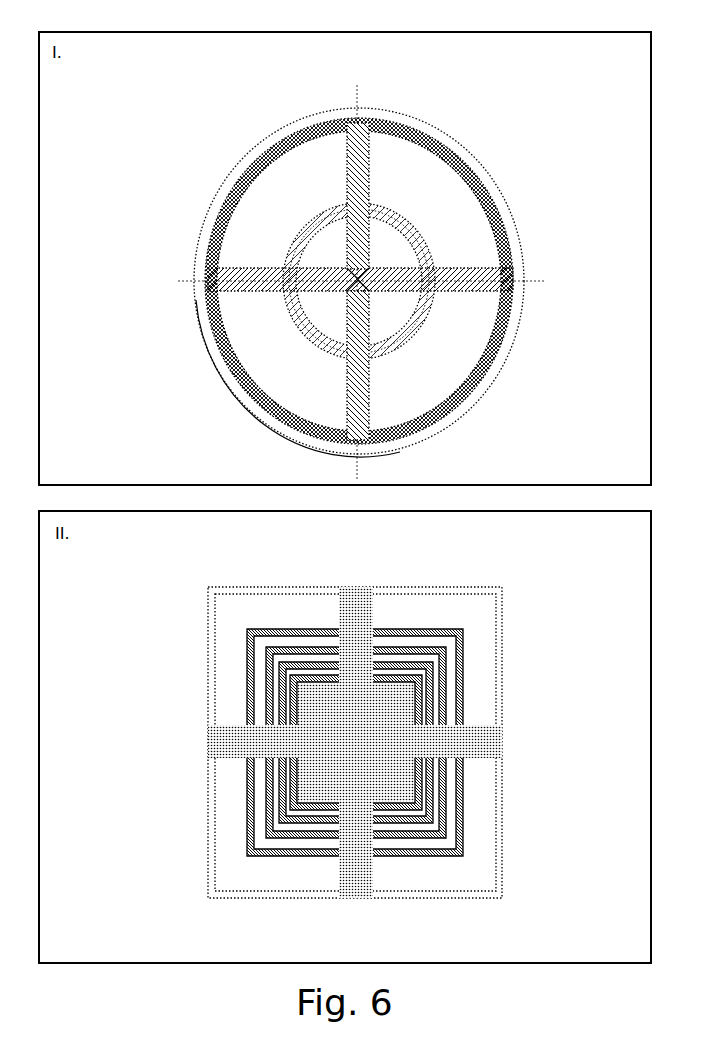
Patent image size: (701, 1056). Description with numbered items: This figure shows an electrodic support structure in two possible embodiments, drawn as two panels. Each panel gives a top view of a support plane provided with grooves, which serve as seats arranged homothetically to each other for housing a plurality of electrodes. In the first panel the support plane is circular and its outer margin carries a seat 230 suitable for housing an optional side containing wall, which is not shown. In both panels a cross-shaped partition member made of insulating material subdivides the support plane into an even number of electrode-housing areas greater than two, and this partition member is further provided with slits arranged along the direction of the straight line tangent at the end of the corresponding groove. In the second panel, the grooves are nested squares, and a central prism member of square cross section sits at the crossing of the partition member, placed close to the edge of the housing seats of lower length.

The seat 230 is at (448, 156).